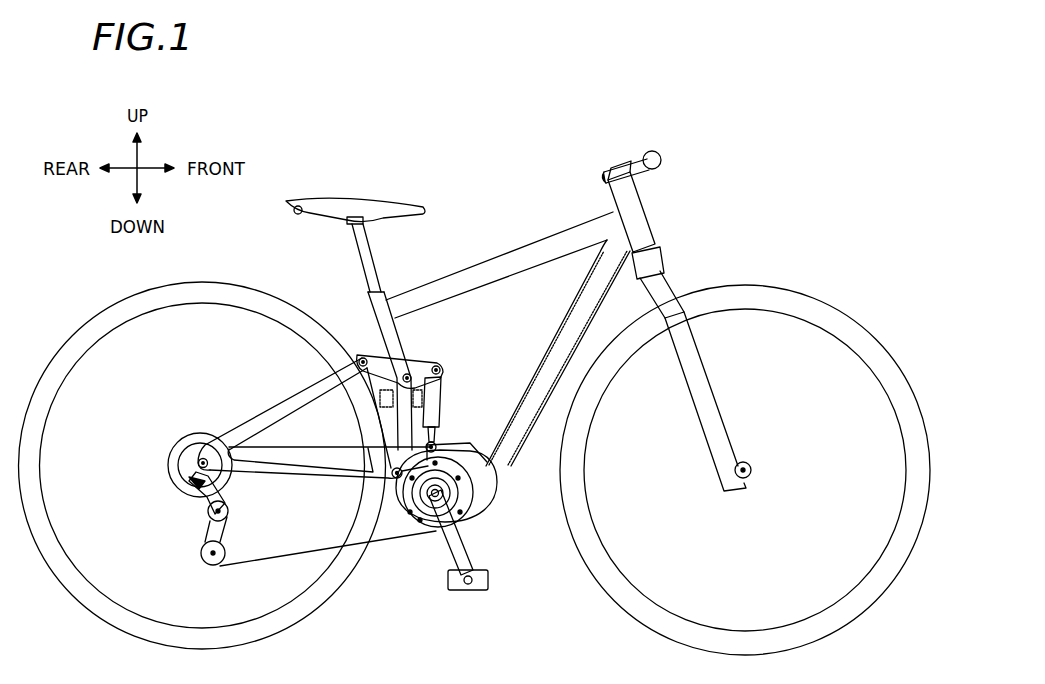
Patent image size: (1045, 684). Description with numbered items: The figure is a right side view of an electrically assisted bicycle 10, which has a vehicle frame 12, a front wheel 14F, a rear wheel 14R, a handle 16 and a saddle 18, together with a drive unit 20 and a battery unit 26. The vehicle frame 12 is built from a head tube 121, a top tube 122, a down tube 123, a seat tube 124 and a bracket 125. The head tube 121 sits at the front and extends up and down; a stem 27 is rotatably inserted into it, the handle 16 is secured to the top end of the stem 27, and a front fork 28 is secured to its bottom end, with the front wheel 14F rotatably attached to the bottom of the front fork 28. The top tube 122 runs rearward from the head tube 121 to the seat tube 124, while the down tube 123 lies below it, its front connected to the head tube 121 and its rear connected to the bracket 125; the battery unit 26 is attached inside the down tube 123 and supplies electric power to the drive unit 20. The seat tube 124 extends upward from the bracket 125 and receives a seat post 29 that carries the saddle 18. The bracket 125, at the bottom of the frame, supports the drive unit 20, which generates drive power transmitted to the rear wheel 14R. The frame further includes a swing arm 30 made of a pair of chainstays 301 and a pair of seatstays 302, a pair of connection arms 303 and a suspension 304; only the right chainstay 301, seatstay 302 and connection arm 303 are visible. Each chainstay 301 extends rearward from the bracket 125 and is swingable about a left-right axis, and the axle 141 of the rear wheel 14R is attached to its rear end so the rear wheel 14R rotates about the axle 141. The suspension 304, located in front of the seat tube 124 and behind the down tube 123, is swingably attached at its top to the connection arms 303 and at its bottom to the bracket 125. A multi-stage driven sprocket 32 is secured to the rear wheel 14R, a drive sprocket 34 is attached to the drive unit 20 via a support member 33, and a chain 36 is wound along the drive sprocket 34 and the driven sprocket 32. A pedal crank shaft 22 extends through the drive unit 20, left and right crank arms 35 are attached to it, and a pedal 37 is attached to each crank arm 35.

The electrically assisted bicycle 10 is at (722, 151).
The vehicle frame 12 is at (547, 218).
The front wheel 14F is at (893, 373).
The rear wheel 14R is at (200, 287).
The handle 16 is at (655, 158).
The saddle 18 is at (345, 198).
The drive unit 20 is at (483, 510).
The pedal crank shaft 22 is at (460, 517).
The battery unit 26 is at (537, 377).
The stem 27 is at (623, 186).
The front fork 28 is at (717, 428).
The seat post 29 is at (375, 246).
The swing arm 30 is at (280, 382).
The chainstay 301 is at (266, 478).
The seatstay 302 is at (250, 421).
The connection arm 303 is at (362, 356).
The suspension 304 is at (443, 383).
The driven sprocket 32 is at (172, 462).
The support member 33 is at (385, 500).
The drive sprocket 34 is at (420, 530).
The crank arm 35 is at (470, 548).
The chain 36 is at (389, 543).
The pedal 37 is at (488, 583).
The head tube 121 is at (637, 224).
The top tube 122 is at (503, 256).
The down tube 123 is at (553, 322).
The seat tube 124 is at (395, 332).
The bracket 125 is at (452, 438).
The axle 141 is at (198, 457).